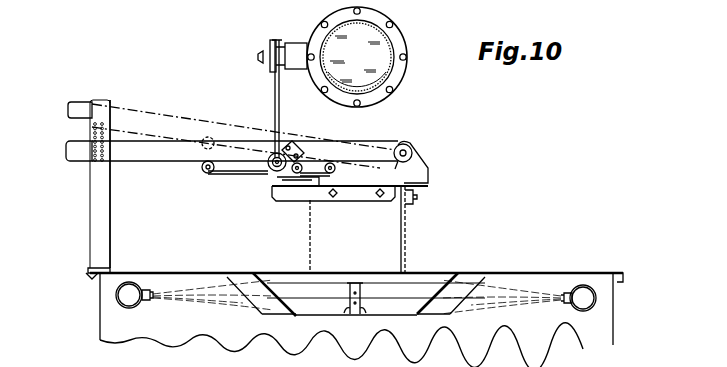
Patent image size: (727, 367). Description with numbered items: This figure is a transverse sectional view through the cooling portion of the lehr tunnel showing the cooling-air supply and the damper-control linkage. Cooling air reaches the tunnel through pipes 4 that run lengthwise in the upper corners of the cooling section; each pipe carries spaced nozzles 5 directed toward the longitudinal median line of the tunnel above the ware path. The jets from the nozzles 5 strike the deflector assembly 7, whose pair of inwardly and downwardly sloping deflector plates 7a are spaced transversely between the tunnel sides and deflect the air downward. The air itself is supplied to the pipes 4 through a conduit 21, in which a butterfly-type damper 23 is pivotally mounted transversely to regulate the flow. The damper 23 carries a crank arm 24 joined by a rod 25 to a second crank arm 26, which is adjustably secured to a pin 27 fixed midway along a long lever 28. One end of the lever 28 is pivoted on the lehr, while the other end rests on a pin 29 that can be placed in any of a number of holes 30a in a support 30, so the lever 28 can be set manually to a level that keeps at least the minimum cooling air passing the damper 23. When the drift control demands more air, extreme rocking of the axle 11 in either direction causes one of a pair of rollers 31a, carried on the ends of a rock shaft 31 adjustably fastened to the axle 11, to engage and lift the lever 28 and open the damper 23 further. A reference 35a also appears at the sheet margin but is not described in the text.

The pipes 4 is at (125, 308).
The nozzles 5 is at (147, 305).
The deflector assembly 7 is at (346, 318).
The deflector plates 7a is at (282, 292).
The axle 11 is at (295, 174).
The conduit 21 is at (393, 42).
The damper 23 is at (393, 74).
The crank arm 24 is at (268, 53).
The rod 25 is at (275, 101).
The second crank arm 26 is at (283, 152).
The pin 27 is at (300, 150).
The lever 28 is at (160, 162).
The pin 29 is at (92, 165).
The support 30 is at (92, 208).
The holes 30a is at (94, 142).
The rock shaft 31 is at (246, 175).
The rollers 31a is at (209, 174).
The element 35a is at (642, 366).